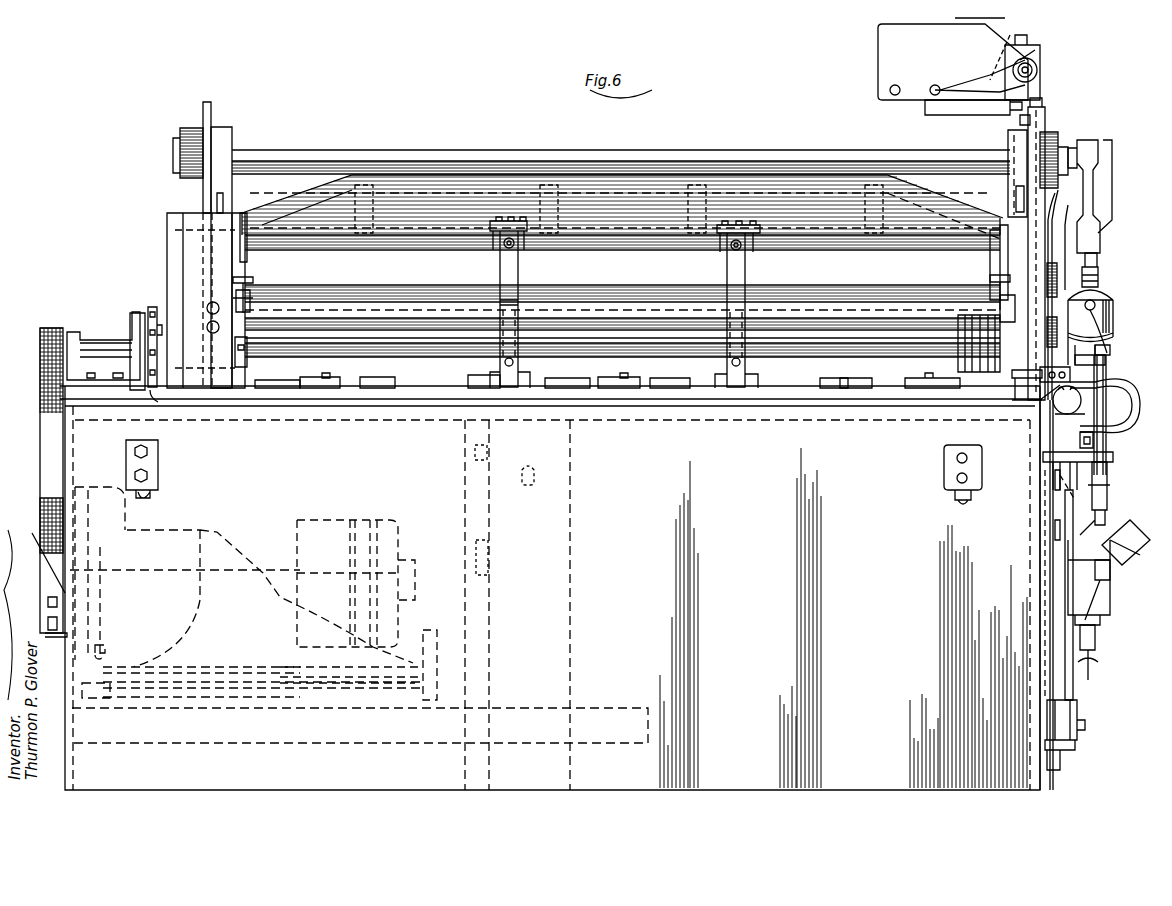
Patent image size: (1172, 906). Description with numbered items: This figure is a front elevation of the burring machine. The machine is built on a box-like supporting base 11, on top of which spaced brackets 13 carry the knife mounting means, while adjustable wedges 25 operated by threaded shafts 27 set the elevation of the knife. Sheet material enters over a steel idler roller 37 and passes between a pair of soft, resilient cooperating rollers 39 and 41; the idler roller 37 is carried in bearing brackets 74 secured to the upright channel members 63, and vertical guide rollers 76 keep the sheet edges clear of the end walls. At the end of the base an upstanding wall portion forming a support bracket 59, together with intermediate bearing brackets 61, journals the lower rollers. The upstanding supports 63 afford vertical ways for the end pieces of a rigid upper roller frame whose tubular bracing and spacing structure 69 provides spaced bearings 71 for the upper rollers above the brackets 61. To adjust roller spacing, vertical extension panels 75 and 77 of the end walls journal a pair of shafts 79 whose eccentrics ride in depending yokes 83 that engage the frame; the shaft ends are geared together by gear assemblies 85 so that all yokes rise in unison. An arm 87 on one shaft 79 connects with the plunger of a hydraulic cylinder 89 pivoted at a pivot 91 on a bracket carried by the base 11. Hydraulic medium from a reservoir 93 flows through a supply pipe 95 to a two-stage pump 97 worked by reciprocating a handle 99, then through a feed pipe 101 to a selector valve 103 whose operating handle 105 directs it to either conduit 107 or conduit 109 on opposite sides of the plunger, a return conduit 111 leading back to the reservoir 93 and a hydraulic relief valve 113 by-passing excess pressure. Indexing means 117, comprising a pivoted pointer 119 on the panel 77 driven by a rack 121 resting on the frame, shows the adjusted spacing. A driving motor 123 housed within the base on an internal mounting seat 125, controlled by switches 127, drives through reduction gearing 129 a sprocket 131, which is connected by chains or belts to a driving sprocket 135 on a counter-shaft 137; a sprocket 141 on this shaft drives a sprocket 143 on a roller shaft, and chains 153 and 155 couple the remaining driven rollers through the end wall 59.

The supporting base 11 is at (762, 577).
The spaced brackets 13 is at (295, 330).
The adjustable wedges 25 is at (375, 380).
The threaded shafts 27 is at (177, 300).
The idler roller 37 is at (355, 329).
The lower cooperating roller 39 is at (453, 347).
The upper cooperating roller 41 is at (622, 268).
The support bracket end wall portion 59 is at (1105, 355).
The intermediate bearing brackets 61 is at (522, 372).
The upstanding supports 63 is at (246, 252).
The tubular bracing and spacing structure 69 is at (388, 196).
The spaced bearings 71 is at (520, 278).
The bearing brackets 74 is at (260, 318).
The vertical extension panel 75 is at (203, 105).
The vertical guide rollers 76 is at (255, 281).
The vertical extension panel 77 is at (1048, 198).
The shafts 79 is at (333, 149).
The yokes 83 is at (222, 135).
The gear assemblies 85 is at (179, 129).
The arm 87 is at (1100, 207).
The hydraulic cylinder 89 is at (1110, 312).
The pivot 91 is at (1098, 455).
The reservoir 93 is at (1100, 618).
The supply pipe 95 is at (1088, 662).
The two-stage pump 97 is at (1080, 702).
The handle 99 is at (1045, 553).
The feed pipe 101 is at (1100, 580).
The selector valve 103 is at (1035, 392).
The operating handle 105 is at (1052, 405).
The conduit 107 is at (1108, 338).
The conduit 109 is at (1105, 434).
The return conduit 111 is at (1075, 412).
The hydraulic relief valve 113 is at (1092, 527).
The indexing means 117 is at (885, 62).
The pivoted pointer 119 is at (990, 60).
The rack 121 is at (1000, 116).
The driving motor 123 is at (322, 520).
The internal mounting seat 125 is at (312, 712).
The switches 127 is at (158, 461).
The reduction gearing 129 is at (120, 553).
The sprocket 131 is at (58, 500).
The driving sprocket 135 is at (48, 328).
The counter-shaft 137 is at (105, 342).
The sprocket 141 is at (158, 402).
The sprocket 143 is at (150, 306).
The chain 153 is at (1090, 284).
The chain 155 is at (1052, 263).